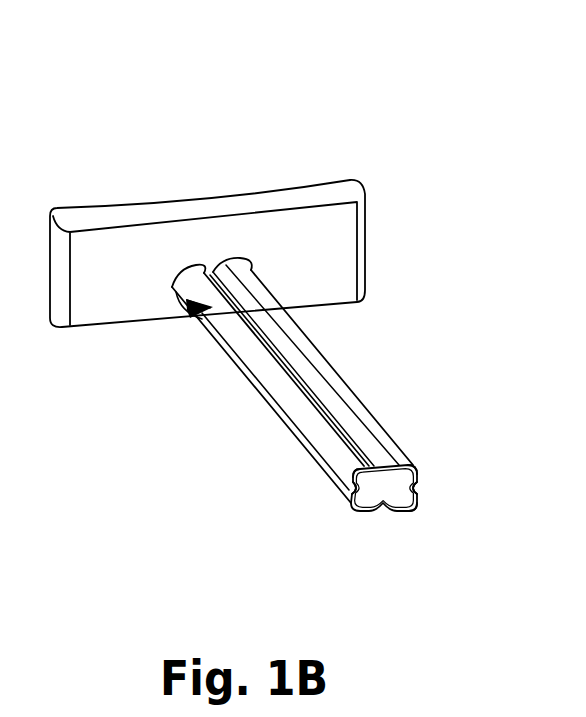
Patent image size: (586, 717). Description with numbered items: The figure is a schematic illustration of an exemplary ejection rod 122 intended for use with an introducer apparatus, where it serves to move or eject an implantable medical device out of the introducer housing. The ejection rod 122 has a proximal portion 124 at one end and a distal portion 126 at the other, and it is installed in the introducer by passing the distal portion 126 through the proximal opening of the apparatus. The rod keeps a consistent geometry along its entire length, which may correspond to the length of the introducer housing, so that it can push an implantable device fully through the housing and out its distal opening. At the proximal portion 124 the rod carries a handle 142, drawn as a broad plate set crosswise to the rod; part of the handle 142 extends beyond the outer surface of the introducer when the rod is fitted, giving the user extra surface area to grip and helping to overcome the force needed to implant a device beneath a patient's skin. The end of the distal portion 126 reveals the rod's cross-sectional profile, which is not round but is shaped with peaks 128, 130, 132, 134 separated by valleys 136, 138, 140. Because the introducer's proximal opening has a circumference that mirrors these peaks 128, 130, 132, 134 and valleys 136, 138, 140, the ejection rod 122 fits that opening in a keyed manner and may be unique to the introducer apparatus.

The ejection rod 122 is at (408, 96).
The handle 142 is at (113, 208).
The valley 138 is at (357, 433).
The proximal portion 124 is at (192, 311).
The distal portion 126 is at (354, 528).
The peak 128 is at (358, 514).
The peak 130 is at (348, 474).
The peak 132 is at (415, 472).
The peak 134 is at (415, 507).
The valley 136 is at (353, 492).
The valley 140 is at (415, 487).